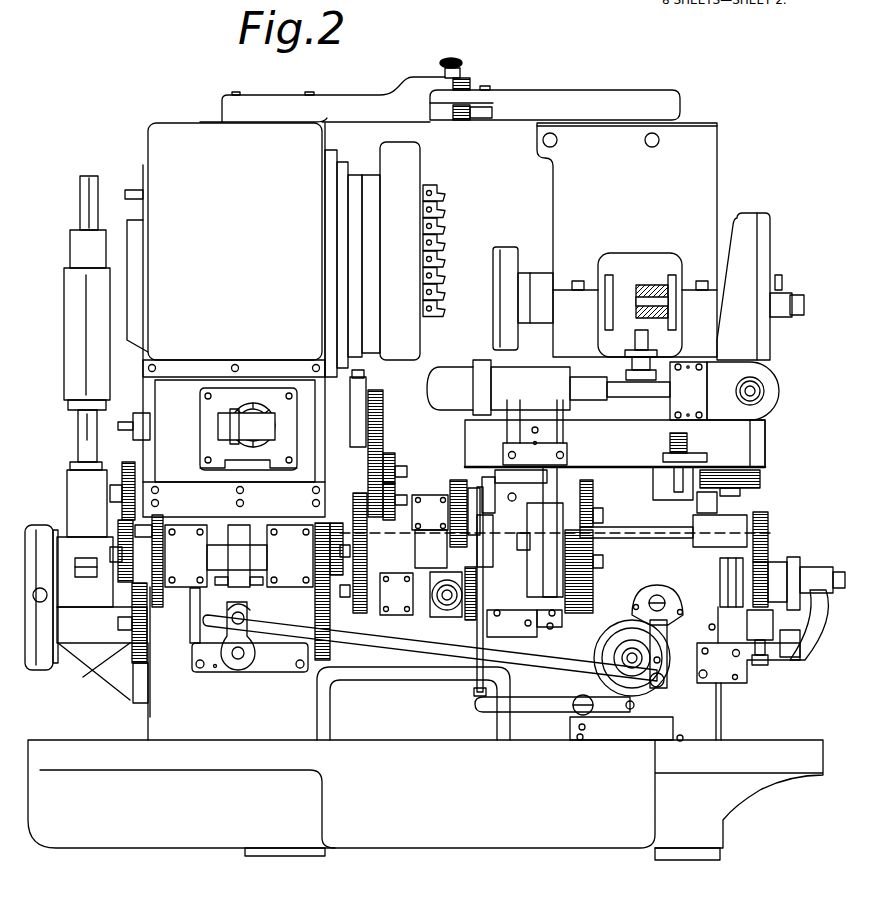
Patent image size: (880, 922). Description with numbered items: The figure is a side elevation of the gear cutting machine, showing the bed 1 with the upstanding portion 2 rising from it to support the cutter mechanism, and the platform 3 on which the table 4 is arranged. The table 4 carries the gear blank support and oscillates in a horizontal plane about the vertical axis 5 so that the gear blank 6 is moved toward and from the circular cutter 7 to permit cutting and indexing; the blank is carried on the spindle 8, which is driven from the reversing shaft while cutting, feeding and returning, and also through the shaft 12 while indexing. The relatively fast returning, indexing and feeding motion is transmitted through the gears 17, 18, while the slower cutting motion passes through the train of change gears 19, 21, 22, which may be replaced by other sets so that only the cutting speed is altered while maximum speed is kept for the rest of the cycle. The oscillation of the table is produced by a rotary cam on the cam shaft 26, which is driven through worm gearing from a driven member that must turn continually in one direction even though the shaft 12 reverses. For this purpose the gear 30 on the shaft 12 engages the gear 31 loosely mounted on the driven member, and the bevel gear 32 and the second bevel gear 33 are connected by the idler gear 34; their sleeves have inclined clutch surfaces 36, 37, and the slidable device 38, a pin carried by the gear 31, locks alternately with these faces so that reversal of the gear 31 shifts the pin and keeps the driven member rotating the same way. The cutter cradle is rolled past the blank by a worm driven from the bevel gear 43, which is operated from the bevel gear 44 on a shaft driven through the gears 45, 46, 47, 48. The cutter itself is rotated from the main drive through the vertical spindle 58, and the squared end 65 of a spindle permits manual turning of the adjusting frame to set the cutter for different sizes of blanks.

The bed 1 is at (680, 830).
The upstanding portion 2 is at (234, 320).
The platform 3 is at (572, 482).
The table 4 is at (708, 478).
The vertical axis 5 is at (460, 62).
The gear blank 6 is at (506, 252).
The circular cutter 7 is at (445, 218).
The spindle 8 is at (648, 292).
The shaft 12 is at (614, 533).
The gear 17 is at (320, 672).
The gear 18 is at (314, 552).
The change gear 19 is at (73, 695).
The change gear 21 is at (152, 604).
The change gear 22 is at (163, 522).
The cam shaft 26 is at (615, 655).
The gear 30 is at (758, 528).
The gear 31 is at (762, 562).
The bevel gear 32 is at (806, 594).
The second bevel gear 33 is at (740, 673).
The idler gear 34 is at (768, 645).
The clutch surface 36 is at (790, 568).
The clutch surface 37 is at (735, 588).
The slidable device 38 is at (806, 580).
The bevel gear 43 is at (250, 402).
The bevel gear 44 is at (226, 420).
The gear 45 is at (380, 420).
The gear 46 is at (390, 450).
The gear 47 is at (392, 482).
The gear 48 is at (402, 495).
The vertical spindle 58 is at (87, 445).
The squared end 65 is at (131, 190).